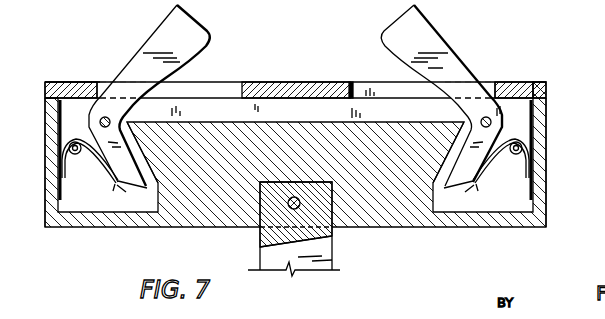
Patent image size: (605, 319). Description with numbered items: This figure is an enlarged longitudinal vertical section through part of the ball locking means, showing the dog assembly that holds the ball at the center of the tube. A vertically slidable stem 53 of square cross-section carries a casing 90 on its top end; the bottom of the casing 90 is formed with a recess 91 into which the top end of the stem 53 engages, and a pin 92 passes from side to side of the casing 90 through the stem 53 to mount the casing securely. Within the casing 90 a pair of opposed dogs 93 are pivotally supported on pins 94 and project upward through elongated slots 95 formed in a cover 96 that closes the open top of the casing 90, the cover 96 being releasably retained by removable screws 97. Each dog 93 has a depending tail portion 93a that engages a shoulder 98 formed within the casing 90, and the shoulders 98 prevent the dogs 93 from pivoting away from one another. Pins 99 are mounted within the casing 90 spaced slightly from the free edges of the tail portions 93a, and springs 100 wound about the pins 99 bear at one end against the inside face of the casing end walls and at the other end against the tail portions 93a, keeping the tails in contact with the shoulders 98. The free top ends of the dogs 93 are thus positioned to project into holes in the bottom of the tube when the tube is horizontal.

The stem 53 is at (308, 265).
The casing 90 is at (406, 222).
The recess 91 is at (253, 207).
The pin 92 is at (268, 232).
The dog 93 is at (163, 33).
The tail portion 93a is at (125, 187).
The pin 94 is at (99, 121).
The elongated slot 95 is at (218, 89).
The cover 96 is at (505, 83).
The screw 97 is at (52, 81).
The shoulder 98 is at (140, 156).
The pin 99 is at (66, 166).
The spring 100 is at (58, 190).